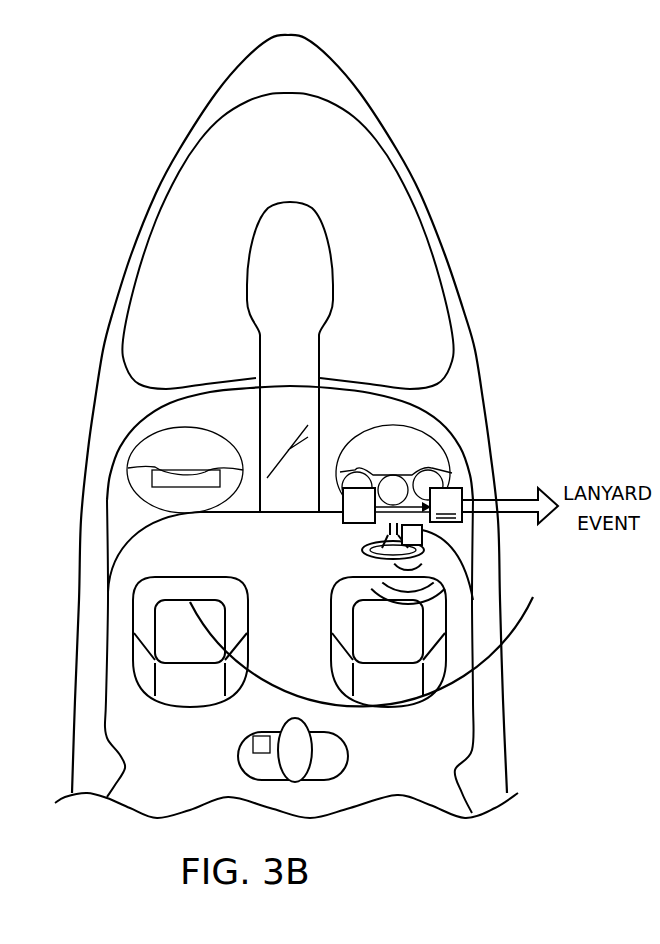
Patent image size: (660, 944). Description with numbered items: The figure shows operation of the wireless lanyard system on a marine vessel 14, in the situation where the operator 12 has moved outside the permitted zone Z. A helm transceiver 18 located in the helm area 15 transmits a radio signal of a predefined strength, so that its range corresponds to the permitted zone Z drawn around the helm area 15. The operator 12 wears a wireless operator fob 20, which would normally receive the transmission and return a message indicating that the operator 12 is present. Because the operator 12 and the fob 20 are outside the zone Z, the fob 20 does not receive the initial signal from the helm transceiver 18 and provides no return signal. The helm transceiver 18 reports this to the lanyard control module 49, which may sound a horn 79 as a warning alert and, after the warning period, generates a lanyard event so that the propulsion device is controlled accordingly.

The marine vessel 14 is at (434, 218).
The helm area 15 is at (482, 587).
The helm transceiver 18 is at (360, 486).
The lanyard control module 49 is at (446, 505).
The horn 79 is at (425, 549).
The permitted zone Z is at (455, 687).
The operator 12 is at (330, 758).
The wireless operator fob 20 is at (253, 742).